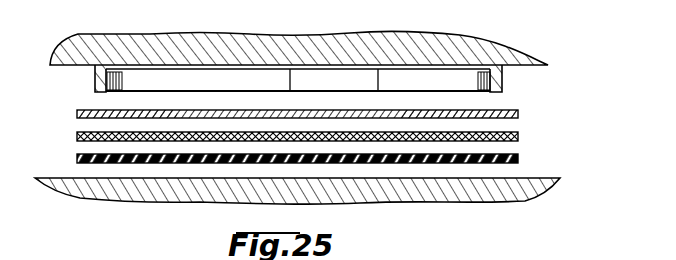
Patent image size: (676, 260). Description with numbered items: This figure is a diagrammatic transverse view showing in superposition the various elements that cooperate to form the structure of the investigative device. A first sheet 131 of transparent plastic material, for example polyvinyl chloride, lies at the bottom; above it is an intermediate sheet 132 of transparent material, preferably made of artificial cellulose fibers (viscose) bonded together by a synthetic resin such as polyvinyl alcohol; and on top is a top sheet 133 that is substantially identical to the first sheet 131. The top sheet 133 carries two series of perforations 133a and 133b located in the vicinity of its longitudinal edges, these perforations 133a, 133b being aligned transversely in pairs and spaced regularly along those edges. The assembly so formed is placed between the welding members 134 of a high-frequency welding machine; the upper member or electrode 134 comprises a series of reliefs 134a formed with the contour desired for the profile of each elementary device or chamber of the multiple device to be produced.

The first sheet 131 is at (77, 158).
The intermediate sheet 132 is at (518, 136).
The top sheet 133 is at (77, 113).
The perforations 133a is at (458, 110).
The perforations 133b is at (131, 110).
The welding member 134 is at (300, 46).
The reliefs 134a is at (505, 72).